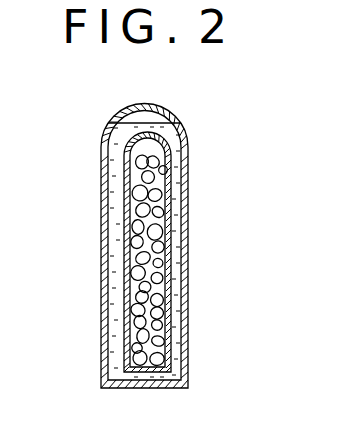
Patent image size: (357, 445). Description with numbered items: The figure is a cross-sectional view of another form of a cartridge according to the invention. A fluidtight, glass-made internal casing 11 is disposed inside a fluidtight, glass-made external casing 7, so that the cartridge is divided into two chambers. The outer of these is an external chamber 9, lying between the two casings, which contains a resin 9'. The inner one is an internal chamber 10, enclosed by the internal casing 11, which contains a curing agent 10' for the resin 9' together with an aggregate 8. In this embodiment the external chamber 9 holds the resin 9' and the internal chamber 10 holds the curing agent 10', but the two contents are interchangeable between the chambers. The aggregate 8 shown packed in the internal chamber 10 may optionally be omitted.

The external casing 7 is at (100, 154).
The aggregate 8 is at (125, 212).
The external chamber 9 is at (111, 229).
The resin 9' is at (111, 342).
The internal chamber 10 is at (185, 252).
The curing agent 10' is at (188, 141).
The internal casing 11 is at (183, 200).